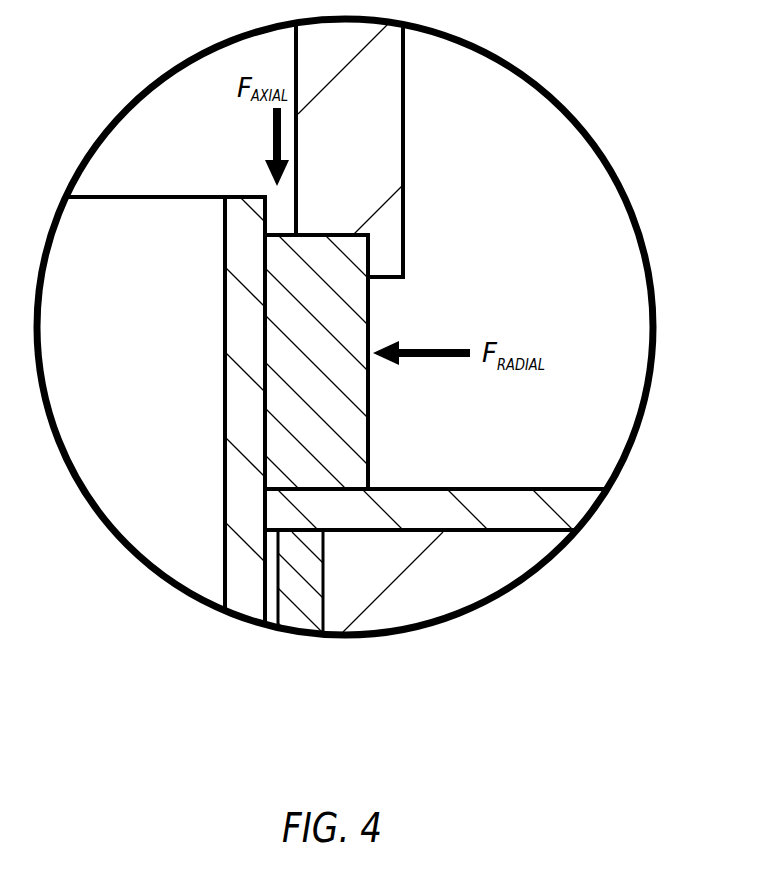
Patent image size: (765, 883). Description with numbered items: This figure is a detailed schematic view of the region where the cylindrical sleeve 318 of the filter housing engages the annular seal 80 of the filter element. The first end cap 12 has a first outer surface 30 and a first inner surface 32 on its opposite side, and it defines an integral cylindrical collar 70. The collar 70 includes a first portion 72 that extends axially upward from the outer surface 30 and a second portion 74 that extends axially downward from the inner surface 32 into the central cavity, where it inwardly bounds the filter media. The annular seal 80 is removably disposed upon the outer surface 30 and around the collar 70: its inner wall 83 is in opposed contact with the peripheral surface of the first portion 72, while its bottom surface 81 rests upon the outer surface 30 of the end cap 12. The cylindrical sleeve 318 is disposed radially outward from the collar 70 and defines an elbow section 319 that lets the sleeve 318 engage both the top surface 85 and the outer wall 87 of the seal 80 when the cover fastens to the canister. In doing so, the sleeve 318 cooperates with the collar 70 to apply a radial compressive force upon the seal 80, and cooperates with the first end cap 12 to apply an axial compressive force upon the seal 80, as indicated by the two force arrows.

The first end cap 12 is at (523, 510).
The first outer surface 30 is at (482, 489).
The first inner surface 32 is at (470, 532).
The cylindrical collar 70 is at (176, 422).
The first portion 72 is at (225, 317).
The second portion 74 is at (225, 570).
The annular seal 80 is at (345, 421).
The bottom surface 81 is at (332, 490).
The inner wall 83 is at (265, 393).
The top surface 85 is at (368, 290).
The outer wall 87 is at (368, 377).
The cylindrical sleeve 318 is at (404, 133).
The elbow section 319 is at (370, 292).